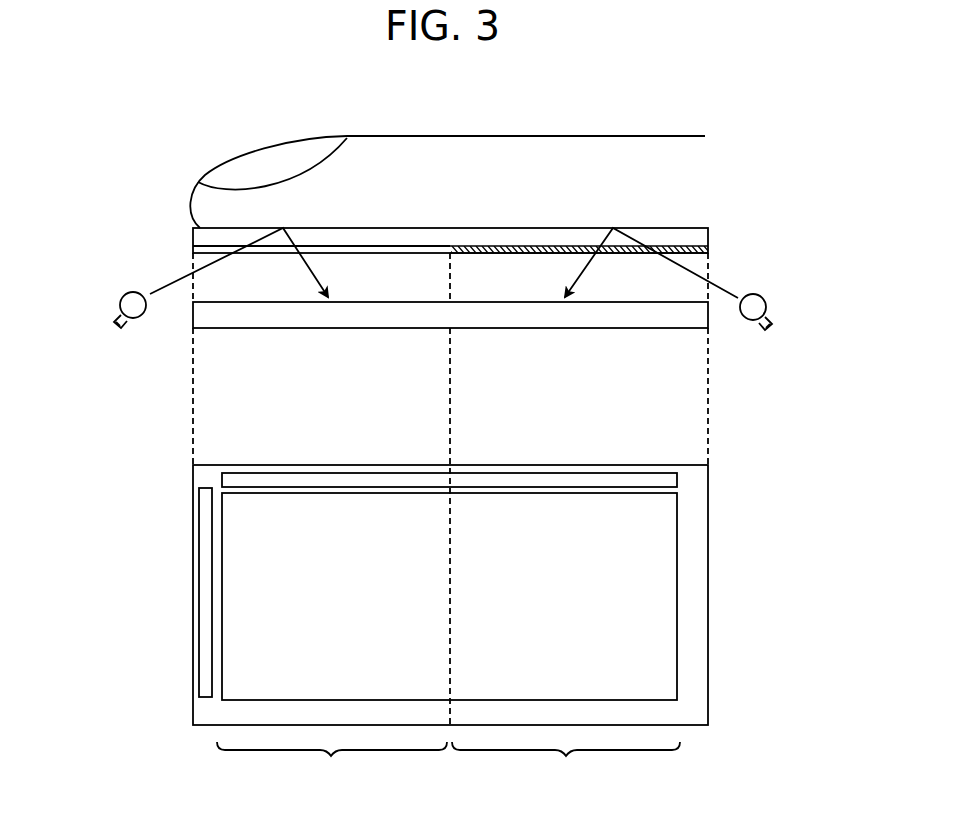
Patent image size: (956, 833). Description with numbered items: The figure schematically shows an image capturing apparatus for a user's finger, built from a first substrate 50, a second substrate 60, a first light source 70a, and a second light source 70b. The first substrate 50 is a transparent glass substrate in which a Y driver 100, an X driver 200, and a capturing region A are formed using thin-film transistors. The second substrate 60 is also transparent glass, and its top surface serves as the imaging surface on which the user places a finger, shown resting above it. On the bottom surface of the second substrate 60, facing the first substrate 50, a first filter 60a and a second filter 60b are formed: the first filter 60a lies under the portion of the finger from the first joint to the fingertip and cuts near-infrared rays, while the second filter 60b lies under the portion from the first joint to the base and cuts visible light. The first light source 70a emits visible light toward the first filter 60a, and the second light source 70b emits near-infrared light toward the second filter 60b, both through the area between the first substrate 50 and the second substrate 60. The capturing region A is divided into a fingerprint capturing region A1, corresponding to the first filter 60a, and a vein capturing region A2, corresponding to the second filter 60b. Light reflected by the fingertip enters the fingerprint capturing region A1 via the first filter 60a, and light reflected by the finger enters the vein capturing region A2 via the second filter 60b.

The first substrate 50 is at (678, 322).
The second substrate 60 is at (705, 240).
The first filter 60a is at (200, 250).
The second filter 60b is at (712, 250).
The first light source 70a is at (118, 310).
The second light source 70b is at (770, 312).
The Y driver 100 is at (203, 600).
The X driver 200 is at (543, 480).
The capturing region A is at (672, 612).
The fingerprint capturing region A1 is at (332, 765).
The vein capturing region A2 is at (566, 765).